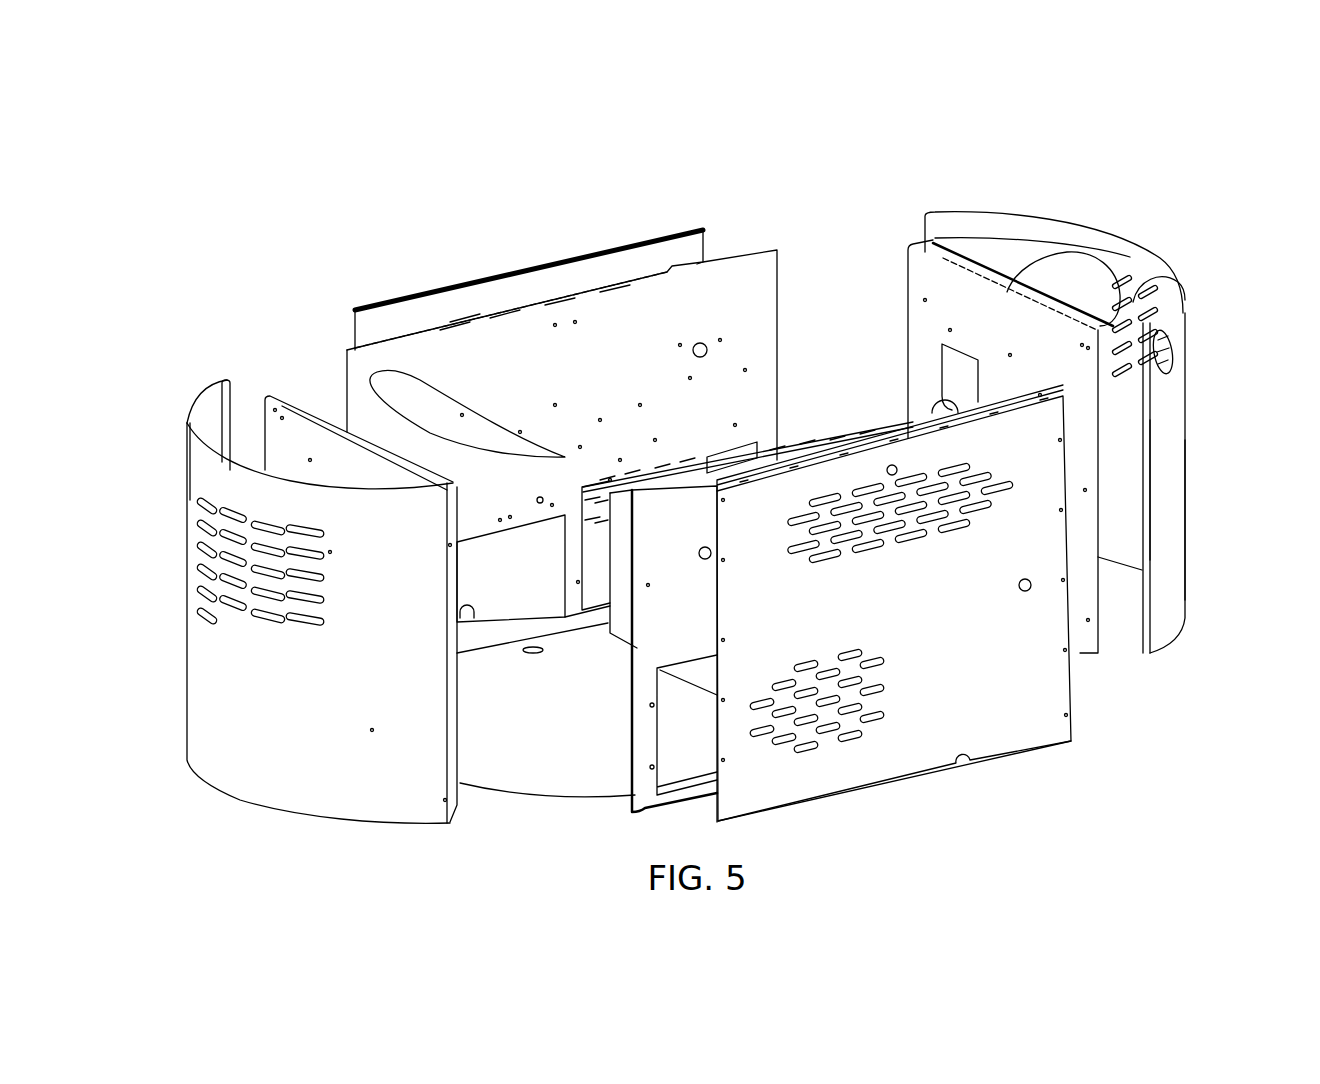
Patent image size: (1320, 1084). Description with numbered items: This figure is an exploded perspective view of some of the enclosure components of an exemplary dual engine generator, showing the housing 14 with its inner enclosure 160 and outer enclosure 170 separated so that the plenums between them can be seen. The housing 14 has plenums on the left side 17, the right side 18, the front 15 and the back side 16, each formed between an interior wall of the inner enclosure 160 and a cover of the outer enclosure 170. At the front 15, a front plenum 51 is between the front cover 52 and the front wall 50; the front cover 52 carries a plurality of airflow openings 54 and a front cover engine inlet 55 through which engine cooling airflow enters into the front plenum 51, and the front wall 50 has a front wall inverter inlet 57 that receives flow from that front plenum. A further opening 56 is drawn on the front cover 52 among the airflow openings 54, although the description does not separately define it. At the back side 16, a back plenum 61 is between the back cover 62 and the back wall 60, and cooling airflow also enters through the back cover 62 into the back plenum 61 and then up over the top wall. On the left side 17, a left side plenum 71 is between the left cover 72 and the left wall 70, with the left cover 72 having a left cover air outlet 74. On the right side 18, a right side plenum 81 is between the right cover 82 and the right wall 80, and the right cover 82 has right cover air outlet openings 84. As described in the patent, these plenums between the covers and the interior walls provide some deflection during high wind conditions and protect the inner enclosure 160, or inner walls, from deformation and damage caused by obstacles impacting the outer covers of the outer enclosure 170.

The housing 14 is at (709, 469).
The front 15 is at (980, 743).
The back side 16 is at (620, 245).
The left side 17 is at (210, 645).
The right side 18 is at (1173, 380).
The front wall 50 is at (647, 577).
The front plenum 51 is at (710, 577).
The front cover 52 is at (725, 581).
The airflow openings 54 is at (869, 679).
The front cover engine inlet 55 is at (923, 506).
The vent slot 56 is at (869, 657).
The front wall inverter inlet 57 is at (693, 727).
The back wall 60 is at (757, 288).
The back plenum 61 is at (522, 295).
The back cover 62 is at (688, 245).
The left wall 70 is at (318, 427).
The left plenum 71 is at (250, 428).
The left cover 72 is at (190, 415).
The left cover air outlet 74 is at (212, 555).
The right wall 80 is at (1008, 290).
The right plenum 81 is at (1140, 260).
The right cover 82 is at (1157, 423).
The right cover air outlet openings 84 is at (1178, 284).
The inner enclosure 160 is at (1098, 525).
The outer enclosure 170 is at (1168, 483).